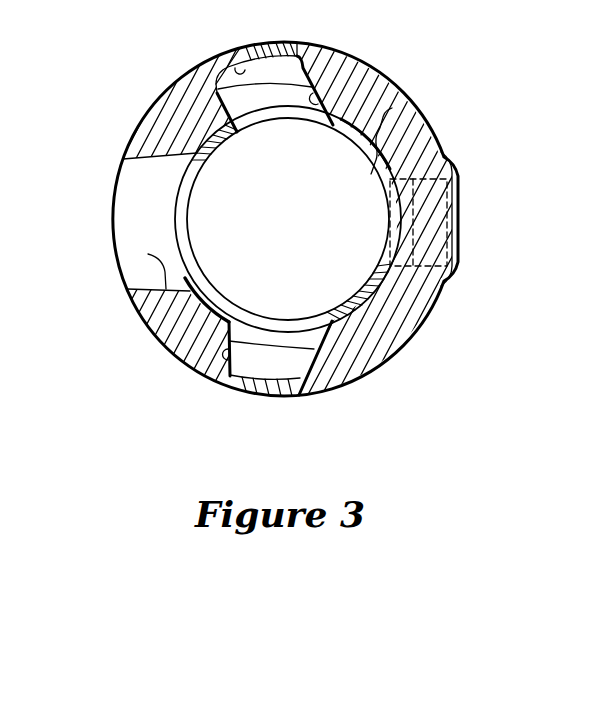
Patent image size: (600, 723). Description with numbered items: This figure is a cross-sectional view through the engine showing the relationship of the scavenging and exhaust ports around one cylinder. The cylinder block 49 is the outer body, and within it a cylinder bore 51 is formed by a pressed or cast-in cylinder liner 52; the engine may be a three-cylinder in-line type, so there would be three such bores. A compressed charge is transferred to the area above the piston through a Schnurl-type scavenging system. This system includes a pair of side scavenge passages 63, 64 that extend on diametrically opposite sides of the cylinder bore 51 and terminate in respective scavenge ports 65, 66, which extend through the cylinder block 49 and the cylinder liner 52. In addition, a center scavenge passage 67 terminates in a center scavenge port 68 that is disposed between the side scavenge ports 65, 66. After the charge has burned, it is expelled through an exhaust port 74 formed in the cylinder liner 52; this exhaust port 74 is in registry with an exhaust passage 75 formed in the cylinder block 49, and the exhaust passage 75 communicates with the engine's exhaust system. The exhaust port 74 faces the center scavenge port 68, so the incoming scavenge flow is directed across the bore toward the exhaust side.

The cylinder block 49 is at (136, 128).
The cylinder bore 51 is at (425, 123).
The cylinder liner 52 is at (392, 108).
The side scavenge passage 63 is at (270, 44).
The side scavenge passage 64 is at (227, 372).
The scavenge port 65 is at (306, 75).
The scavenge port 66 is at (252, 317).
The center scavenge passage 67 is at (415, 268).
The center scavenge port 68 is at (392, 222).
The exhaust port 74 is at (200, 156).
The exhaust passage 75 is at (148, 254).